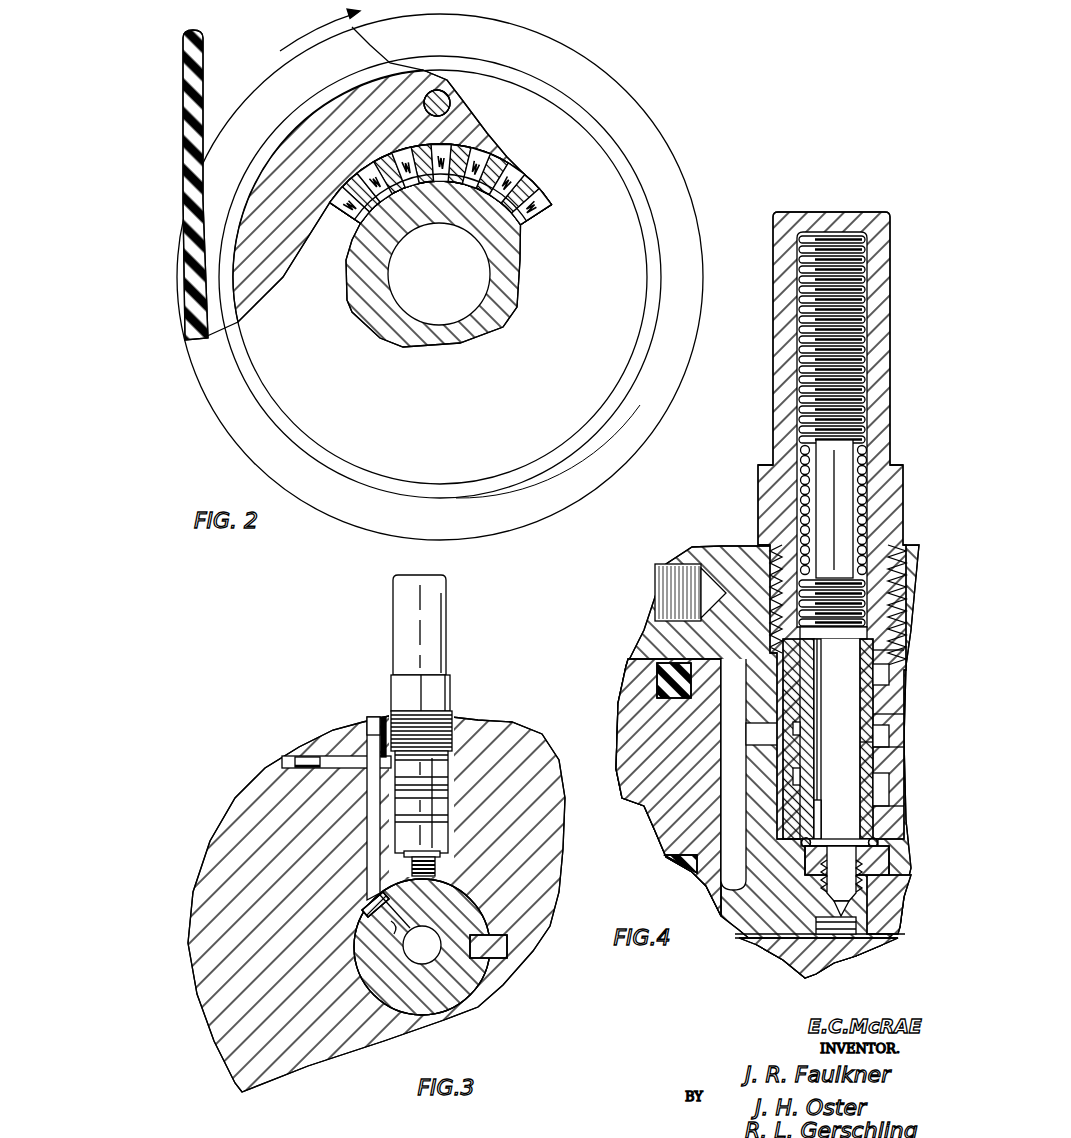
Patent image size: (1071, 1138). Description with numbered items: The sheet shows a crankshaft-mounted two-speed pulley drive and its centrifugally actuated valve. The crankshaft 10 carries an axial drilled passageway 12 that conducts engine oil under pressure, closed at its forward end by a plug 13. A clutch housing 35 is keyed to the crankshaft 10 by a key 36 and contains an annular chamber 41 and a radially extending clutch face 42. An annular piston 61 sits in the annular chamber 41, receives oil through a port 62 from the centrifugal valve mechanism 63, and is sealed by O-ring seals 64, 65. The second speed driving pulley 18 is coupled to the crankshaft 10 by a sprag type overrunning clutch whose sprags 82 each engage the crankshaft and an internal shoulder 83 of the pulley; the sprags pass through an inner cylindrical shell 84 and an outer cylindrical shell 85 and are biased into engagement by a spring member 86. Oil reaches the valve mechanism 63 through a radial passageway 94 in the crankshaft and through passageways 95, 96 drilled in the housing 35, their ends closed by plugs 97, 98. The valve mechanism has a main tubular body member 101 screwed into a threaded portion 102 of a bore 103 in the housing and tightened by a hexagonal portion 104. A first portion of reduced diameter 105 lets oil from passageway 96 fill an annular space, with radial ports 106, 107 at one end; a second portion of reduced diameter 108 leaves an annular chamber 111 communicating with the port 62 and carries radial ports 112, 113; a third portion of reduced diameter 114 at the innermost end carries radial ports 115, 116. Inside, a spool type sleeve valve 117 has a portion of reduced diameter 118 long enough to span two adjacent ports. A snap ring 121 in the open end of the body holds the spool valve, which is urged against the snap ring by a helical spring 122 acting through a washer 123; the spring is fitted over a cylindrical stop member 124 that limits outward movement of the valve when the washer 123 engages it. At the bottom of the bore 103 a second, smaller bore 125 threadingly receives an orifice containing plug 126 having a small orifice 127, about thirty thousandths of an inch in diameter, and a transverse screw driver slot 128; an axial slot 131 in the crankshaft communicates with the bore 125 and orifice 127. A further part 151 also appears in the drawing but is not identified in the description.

In FIG. 2, the crankshaft 10 is at (347, 268).
In FIG. 3, the crankshaft 10 is at (475, 982).
In FIG. 4, the crankshaft 10 is at (873, 941).
In FIG. 3, the drilled passageway 12 is at (426, 951).
In FIG. 2, the plug 13 is at (451, 275).
In FIG. 2, the second speed driving pulley 18 is at (458, 108).
In FIG. 3, the clutch housing 35 is at (535, 741).
In FIG. 4, the clutch housing 35 is at (734, 546).
In FIG. 3, the key 36 is at (508, 955).
In FIG. 4, the annular chamber 41 is at (742, 784).
In FIG. 4, the clutch face 42 is at (684, 583).
In FIG. 4, the annular piston 61 is at (640, 784).
In FIG. 4, the port 62 is at (745, 742).
In FIG. 3, the centrifugal valve mechanism 63 is at (429, 725).
In FIG. 4, the centrifugal valve mechanism 63 is at (839, 578).
In FIG. 4, the O-ring seal 64 is at (688, 873).
In FIG. 4, the O-ring seal 65 is at (655, 659).
In FIG. 2, the sprags 82 is at (511, 179).
In FIG. 2, the internal shoulder 83 is at (489, 160).
In FIG. 2, the inner cylindrical shell 84 is at (538, 213).
In FIG. 2, the outer cylindrical shell 85 is at (529, 192).
In FIG. 2, the spring member 86 is at (341, 212).
In FIG. 3, the radial passageway 94 is at (388, 930).
In FIG. 3, the passageway 95 is at (372, 840).
In FIG. 3, the passageway 96 is at (383, 717).
In FIG. 3, the plug 97 is at (310, 756).
In FIG. 3, the plug 98 is at (368, 722).
In FIG. 3, the main tubular body member 101 is at (402, 624).
In FIG. 4, the main tubular body member 101 is at (773, 398).
In FIG. 3, the threaded portion 102 is at (455, 716).
In FIG. 4, the threaded portion 102 is at (893, 590).
In FIG. 3, the bore 103 is at (455, 819).
In FIG. 4, the bore 103 is at (874, 736).
In FIG. 3, the hexagonal portion 104 is at (392, 684).
In FIG. 4, the hexagonal portion 104 is at (905, 488).
In FIG. 3, the first portion of reduced diameter 105 is at (455, 769).
In FIG. 4, the first portion of reduced diameter 105 is at (889, 655).
In FIG. 4, the radial port 106 is at (886, 676).
In FIG. 4, the radial port 107 is at (809, 677).
In FIG. 3, the second portion of reduced diameter 108 is at (455, 794).
In FIG. 4, the second portion of reduced diameter 108 is at (888, 745).
In FIG. 4, the annular chamber 111 is at (871, 740).
In FIG. 4, the radial port 112 is at (873, 718).
In FIG. 4, the radial port 113 is at (791, 727).
In FIG. 4, the third portion of reduced diameter 114 is at (886, 809).
In FIG. 4, the radial port 115 is at (891, 777).
In FIG. 4, the radial port 116 is at (782, 778).
In FIG. 4, the spool type sleeve valve 117 is at (869, 833).
In FIG. 4, the portion of reduced diameter 118 is at (862, 787).
In FIG. 4, the snap ring 121 is at (801, 843).
In FIG. 4, the helical spring 122 is at (870, 284).
In FIG. 4, the washer 123 is at (860, 635).
In FIG. 4, the cylindrical stop member 124 is at (842, 466).
In FIG. 4, the second bore 125 is at (856, 928).
In FIG. 4, the orifice containing plug 126 is at (853, 886).
In FIG. 4, the orifice 127 is at (829, 908).
In FIG. 4, the transverse screw driver slot 128 is at (856, 855).
In FIG. 4, the axial slot 131 is at (736, 934).
In FIG. 2, the backing plate 151 is at (201, 77).